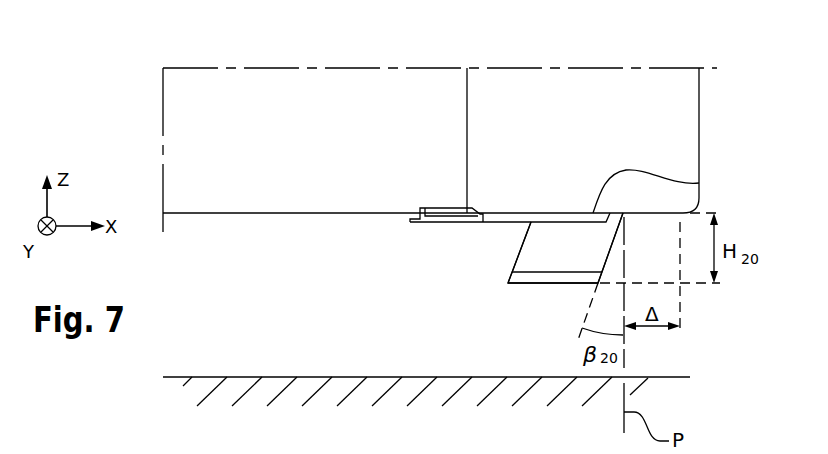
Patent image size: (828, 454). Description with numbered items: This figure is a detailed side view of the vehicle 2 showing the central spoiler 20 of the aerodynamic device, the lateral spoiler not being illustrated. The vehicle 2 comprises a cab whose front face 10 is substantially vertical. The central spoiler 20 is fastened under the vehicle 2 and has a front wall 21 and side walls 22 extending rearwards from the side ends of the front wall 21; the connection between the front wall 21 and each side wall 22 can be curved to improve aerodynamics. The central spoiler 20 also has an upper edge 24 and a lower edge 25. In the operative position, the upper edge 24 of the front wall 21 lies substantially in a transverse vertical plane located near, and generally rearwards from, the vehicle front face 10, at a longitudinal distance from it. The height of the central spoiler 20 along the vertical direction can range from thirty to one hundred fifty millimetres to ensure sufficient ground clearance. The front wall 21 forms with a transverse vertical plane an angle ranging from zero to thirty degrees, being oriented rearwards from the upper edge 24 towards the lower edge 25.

The vehicle 2 is at (573, 107).
The front face 10 is at (700, 95).
The upper edge 24 is at (699, 183).
The central spoiler 20 is at (480, 263).
The front wall 21 is at (615, 258).
The side wall 22 is at (537, 255).
The lower edge 25 is at (562, 284).